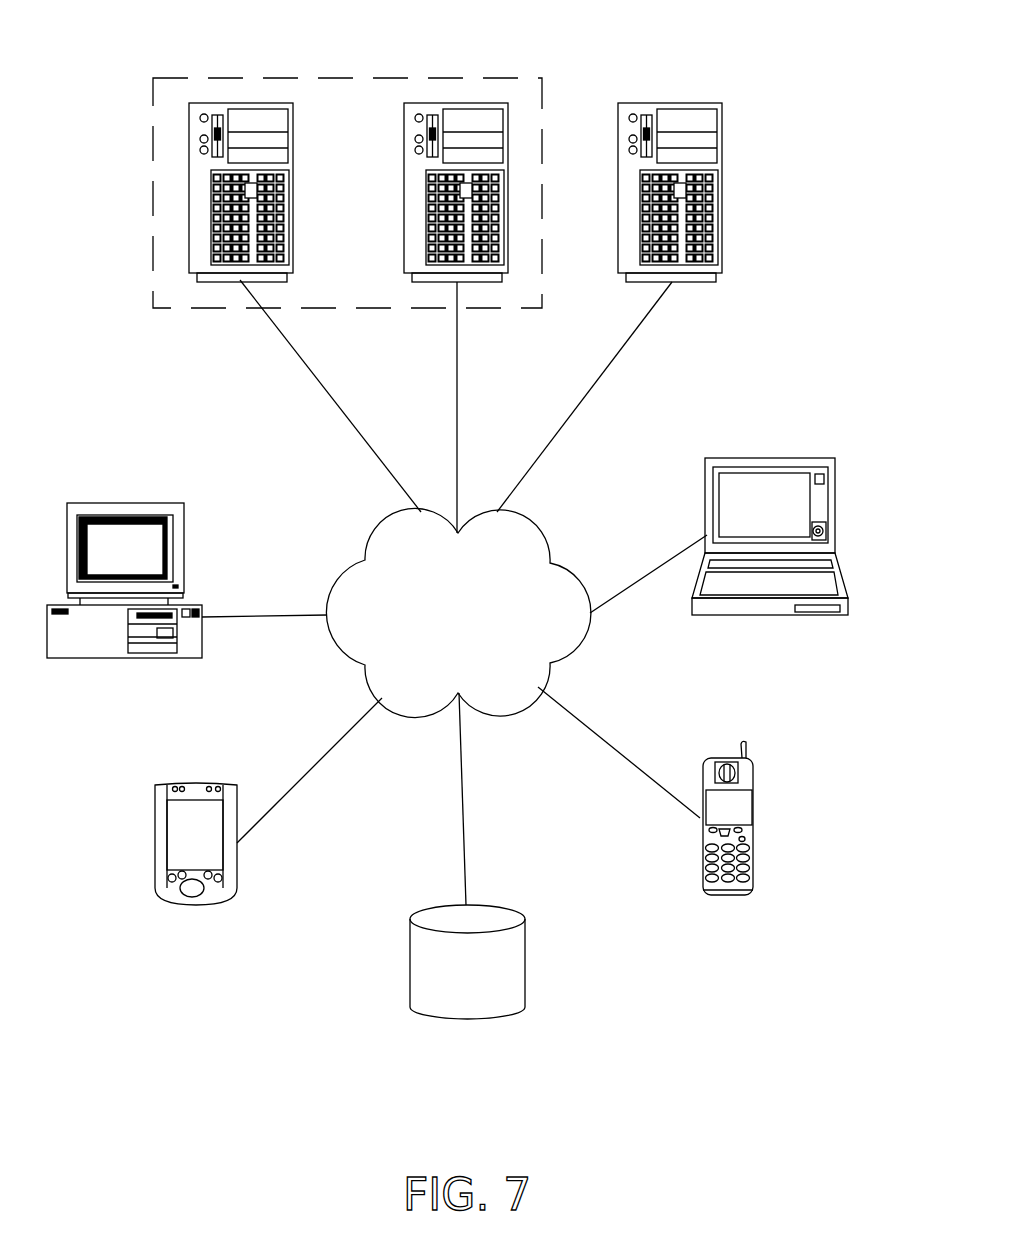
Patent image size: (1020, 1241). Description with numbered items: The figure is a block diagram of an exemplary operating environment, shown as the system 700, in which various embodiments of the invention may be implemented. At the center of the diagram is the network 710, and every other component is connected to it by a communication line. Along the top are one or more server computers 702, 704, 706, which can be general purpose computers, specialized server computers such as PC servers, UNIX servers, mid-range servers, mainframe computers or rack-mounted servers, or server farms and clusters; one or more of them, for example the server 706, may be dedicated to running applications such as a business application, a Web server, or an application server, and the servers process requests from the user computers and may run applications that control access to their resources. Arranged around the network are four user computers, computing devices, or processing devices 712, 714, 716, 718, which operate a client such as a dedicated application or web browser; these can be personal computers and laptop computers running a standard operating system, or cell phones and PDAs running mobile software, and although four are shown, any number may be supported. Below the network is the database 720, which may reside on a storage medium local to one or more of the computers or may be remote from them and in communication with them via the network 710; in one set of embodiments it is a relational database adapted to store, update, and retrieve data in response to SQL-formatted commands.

The system 700 is at (818, 107).
The server computer 702 is at (225, 103).
The server computer 704 is at (457, 103).
The server computer 706 is at (725, 190).
The network 710 is at (437, 661).
The user computer 712 is at (120, 503).
The user computer 714 is at (767, 458).
The user computer 716 is at (722, 895).
The user computer 718 is at (197, 905).
The database 720 is at (448, 1009).